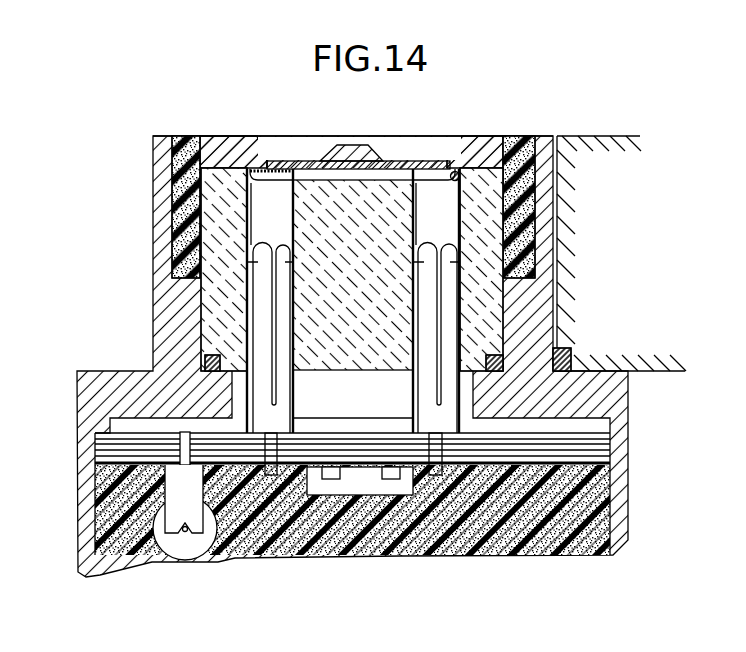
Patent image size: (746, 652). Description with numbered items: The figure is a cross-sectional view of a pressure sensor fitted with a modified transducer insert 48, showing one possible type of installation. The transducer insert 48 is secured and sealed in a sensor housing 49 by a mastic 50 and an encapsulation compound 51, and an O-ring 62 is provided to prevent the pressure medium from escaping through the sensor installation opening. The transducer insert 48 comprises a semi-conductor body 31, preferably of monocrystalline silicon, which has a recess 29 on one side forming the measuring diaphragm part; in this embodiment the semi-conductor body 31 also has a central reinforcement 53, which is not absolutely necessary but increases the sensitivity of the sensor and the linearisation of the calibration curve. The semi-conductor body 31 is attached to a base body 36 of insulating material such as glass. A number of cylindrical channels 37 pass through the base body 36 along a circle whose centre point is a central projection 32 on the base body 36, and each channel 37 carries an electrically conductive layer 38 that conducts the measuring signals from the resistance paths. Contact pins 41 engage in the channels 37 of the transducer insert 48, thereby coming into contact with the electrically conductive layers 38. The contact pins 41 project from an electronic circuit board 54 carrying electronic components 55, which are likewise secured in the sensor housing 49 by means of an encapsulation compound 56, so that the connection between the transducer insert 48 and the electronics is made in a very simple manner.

The recess 29 is at (268, 140).
The semi-conductor body 31 is at (182, 163).
The central projection 32 is at (383, 160).
The base body 36 is at (487, 172).
The cylindrical channels 37 is at (247, 222).
The electrically conductive layer 38 is at (461, 219).
The contact pins 41 is at (258, 244).
The transducer insert 48 is at (379, 222).
The sensor housing 49 is at (533, 290).
The mastic 50 is at (204, 365).
The encapsulation compound 51 is at (522, 160).
The central reinforcement 53 is at (348, 147).
The electronic circuit board 54 is at (587, 447).
The electronic components 55 is at (172, 488).
The encapsulation compound 56 is at (607, 490).
The O-ring 62 is at (568, 350).